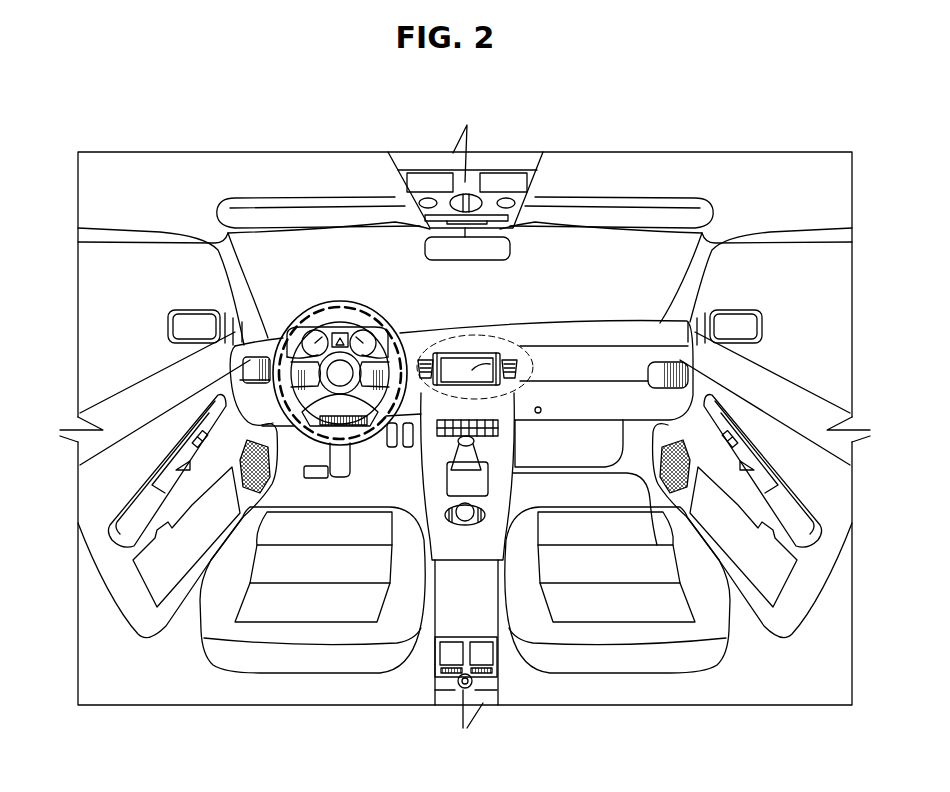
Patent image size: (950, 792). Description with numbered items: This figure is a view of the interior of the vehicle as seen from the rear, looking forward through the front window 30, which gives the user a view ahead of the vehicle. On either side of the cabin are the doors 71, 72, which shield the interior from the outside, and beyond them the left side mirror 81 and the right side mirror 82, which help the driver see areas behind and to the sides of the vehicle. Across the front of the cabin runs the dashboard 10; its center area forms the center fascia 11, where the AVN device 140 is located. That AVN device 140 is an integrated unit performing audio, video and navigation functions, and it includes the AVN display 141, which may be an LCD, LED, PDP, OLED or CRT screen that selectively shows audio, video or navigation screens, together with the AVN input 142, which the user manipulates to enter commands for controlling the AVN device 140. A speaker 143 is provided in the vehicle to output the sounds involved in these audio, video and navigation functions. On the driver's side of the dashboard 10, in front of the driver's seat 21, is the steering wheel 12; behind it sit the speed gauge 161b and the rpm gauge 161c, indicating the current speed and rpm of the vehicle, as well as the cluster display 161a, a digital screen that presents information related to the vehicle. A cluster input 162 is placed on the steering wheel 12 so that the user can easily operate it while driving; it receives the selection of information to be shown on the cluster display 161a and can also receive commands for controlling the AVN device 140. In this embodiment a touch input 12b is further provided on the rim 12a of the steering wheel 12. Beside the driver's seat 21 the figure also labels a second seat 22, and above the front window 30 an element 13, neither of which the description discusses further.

The dashboard 10 is at (617, 337).
The center fascia 11 is at (512, 358).
The steering wheel 12 is at (405, 333).
The rim 12a is at (336, 320).
The touch input 12b is at (322, 328).
The roof 13 is at (277, 177).
The driver's seat 21 is at (297, 633).
The passenger seat 22 is at (655, 637).
The front window 30 is at (612, 243).
The door 71 is at (113, 473).
The door 72 is at (817, 473).
The left side mirror 81 is at (166, 313).
The right side mirror 82 is at (764, 315).
The AVN device 140 is at (473, 342).
The AVN display 141 is at (507, 380).
The AVN input 142 is at (514, 350).
The speaker 143 is at (250, 470).
The cluster display 161a is at (228, 312).
The speed gauge 161b is at (176, 319).
The rpm gauge 161c is at (372, 318).
The cluster input 162 is at (243, 362).